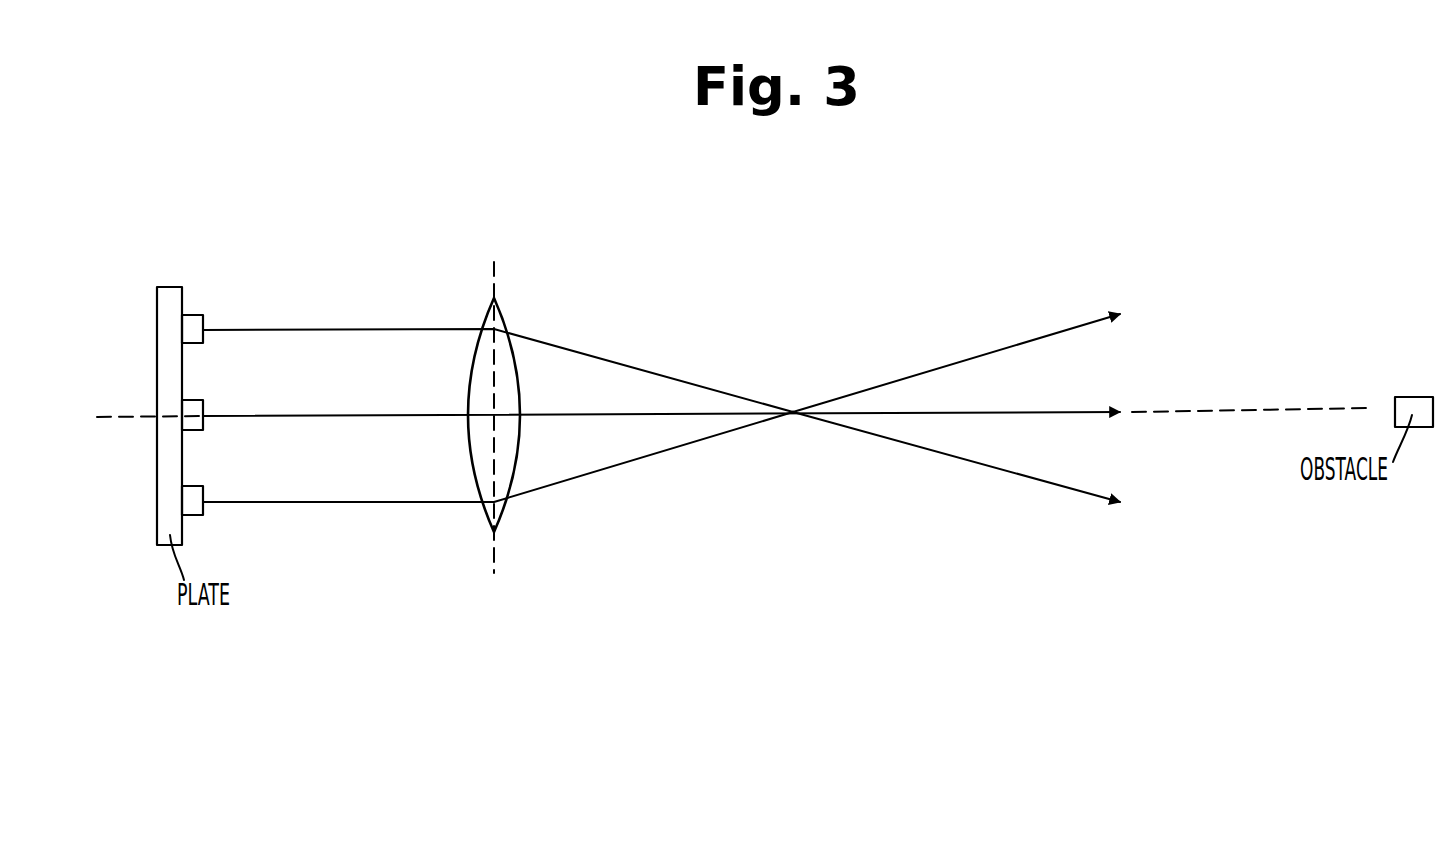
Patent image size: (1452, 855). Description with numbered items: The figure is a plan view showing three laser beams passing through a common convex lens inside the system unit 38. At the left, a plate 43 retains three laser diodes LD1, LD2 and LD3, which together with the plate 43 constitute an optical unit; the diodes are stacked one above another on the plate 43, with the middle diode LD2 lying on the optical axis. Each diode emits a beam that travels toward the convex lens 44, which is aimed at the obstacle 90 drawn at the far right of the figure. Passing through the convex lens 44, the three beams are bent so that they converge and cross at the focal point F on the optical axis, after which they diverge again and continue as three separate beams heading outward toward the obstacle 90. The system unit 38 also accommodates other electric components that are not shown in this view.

The plate 43 is at (172, 292).
The laser diode LD1 is at (209, 318).
The laser diode LD2 is at (209, 403).
The laser diode LD3 is at (209, 489).
The system unit 38 is at (376, 520).
The convex lens 44 is at (503, 507).
The focal point F is at (795, 389).
The obstacle 90 is at (1412, 397).